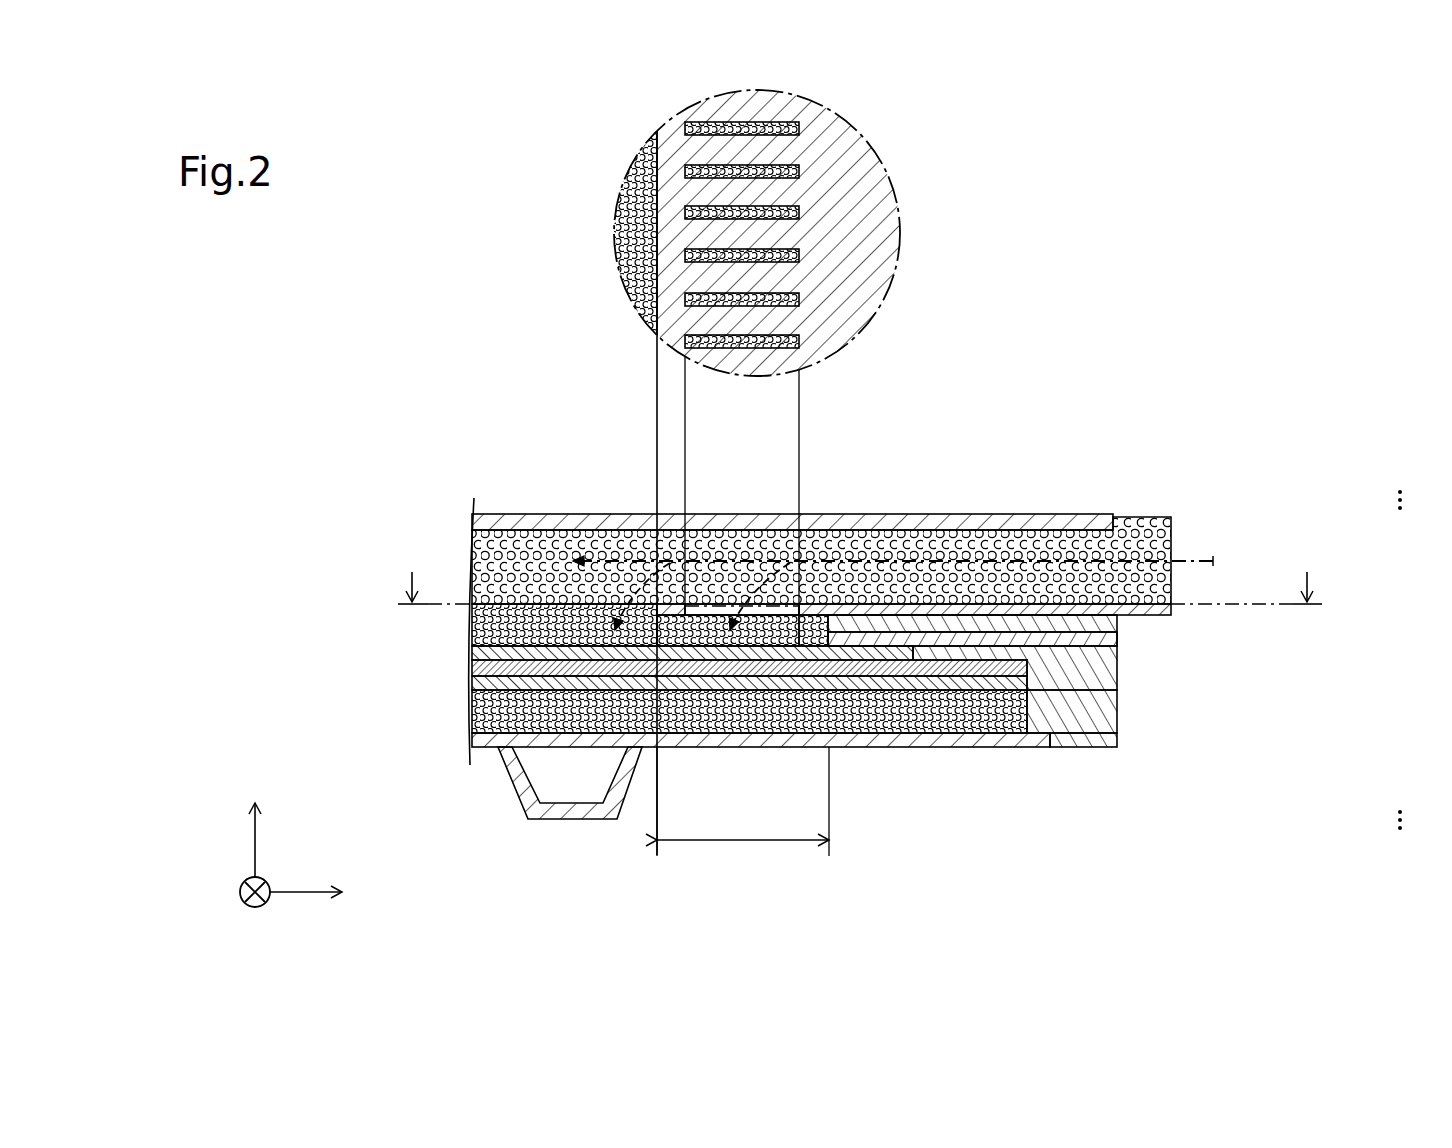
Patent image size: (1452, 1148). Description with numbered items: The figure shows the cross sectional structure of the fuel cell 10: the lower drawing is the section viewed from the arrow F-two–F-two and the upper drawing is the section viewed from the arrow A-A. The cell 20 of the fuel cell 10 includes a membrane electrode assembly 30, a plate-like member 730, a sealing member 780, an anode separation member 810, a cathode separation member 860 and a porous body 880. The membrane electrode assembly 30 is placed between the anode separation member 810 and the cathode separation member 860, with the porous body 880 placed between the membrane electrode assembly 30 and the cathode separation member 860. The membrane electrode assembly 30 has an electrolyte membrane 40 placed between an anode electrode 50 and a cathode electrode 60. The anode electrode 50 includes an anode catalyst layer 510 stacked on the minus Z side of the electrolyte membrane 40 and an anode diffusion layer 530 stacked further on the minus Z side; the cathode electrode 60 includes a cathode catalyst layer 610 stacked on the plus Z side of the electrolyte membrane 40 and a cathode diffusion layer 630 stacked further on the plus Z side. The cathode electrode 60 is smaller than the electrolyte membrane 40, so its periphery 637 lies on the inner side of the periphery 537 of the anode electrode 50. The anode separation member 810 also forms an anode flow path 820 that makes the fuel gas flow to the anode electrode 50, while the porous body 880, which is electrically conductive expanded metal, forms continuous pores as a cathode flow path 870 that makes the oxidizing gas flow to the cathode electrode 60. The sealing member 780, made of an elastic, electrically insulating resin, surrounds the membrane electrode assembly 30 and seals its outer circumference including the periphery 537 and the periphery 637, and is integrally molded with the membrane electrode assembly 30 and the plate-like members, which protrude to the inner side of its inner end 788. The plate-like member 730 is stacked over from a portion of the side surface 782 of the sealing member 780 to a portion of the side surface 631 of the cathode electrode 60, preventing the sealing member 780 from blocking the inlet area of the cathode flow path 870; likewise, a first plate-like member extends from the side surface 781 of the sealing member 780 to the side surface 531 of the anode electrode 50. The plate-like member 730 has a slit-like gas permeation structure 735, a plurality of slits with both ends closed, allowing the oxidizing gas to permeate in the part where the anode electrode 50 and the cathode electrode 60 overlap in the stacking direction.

The fuel cell 10 is at (1360, 420).
The cell 20 is at (1343, 503).
The membrane electrode assembly 30 is at (305, 605).
The electrolyte membrane 40 is at (472, 668).
The anode electrode 50 is at (365, 687).
The cathode electrode 60 is at (365, 613).
The anode catalyst layer 510 is at (472, 683).
The anode diffusion layer 530 is at (472, 712).
The minus Z-axis direction side surface of anode electrode 531 is at (580, 737).
The periphery of anode electrode 537 is at (1030, 707).
The cathode catalyst layer 610 is at (472, 653).
The cathode diffusion layer 630 is at (472, 626).
The minus Z-axis direction side surface of cathode electrode 631 is at (532, 602).
The periphery of cathode electrode 637 is at (1195, 645).
The plate-like member 730 is at (1170, 607).
The gas permeation structure 735 is at (800, 341).
The sealing member 780 is at (1102, 682).
The minus Z-axis direction side surface of sealing member 781 is at (1050, 742).
The minus Z-axis direction side surface of sealing member 782 is at (965, 612).
The inner end of sealing member 788 is at (800, 613).
The anode separation member 810 is at (1070, 747).
The anode flow path 820 is at (612, 773).
The cathode separation member 860 is at (1068, 514).
The cathode flow path 870 is at (1200, 561).
The porous body 880 is at (1115, 548).